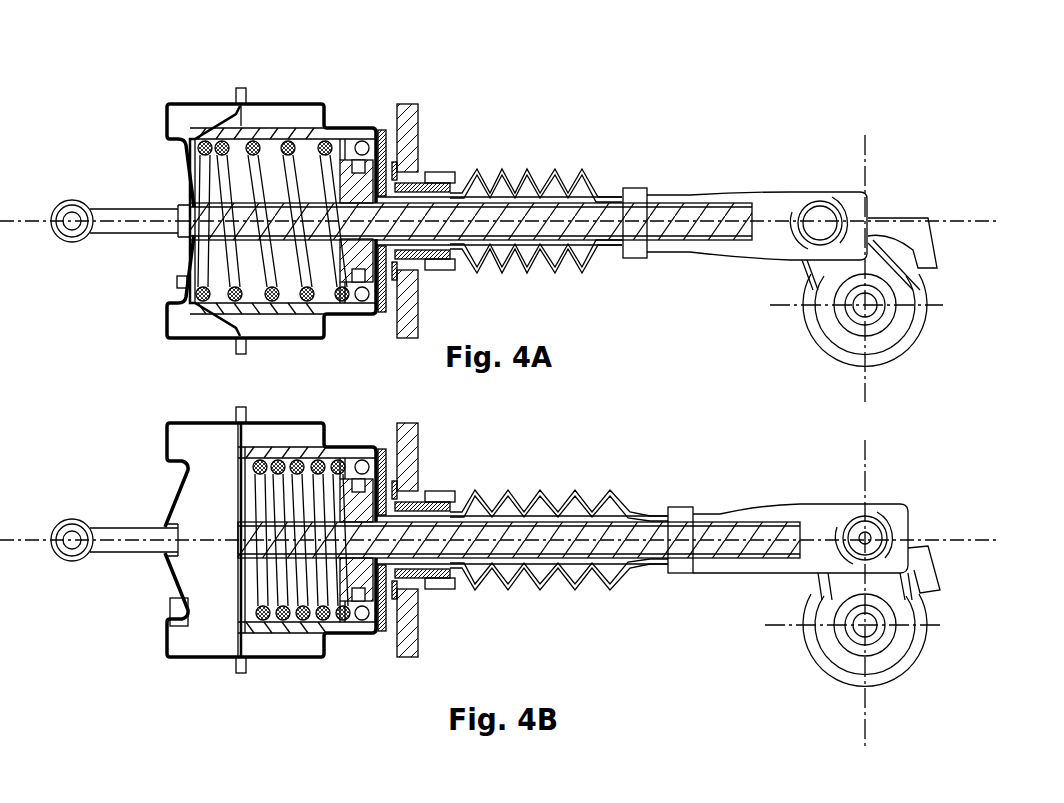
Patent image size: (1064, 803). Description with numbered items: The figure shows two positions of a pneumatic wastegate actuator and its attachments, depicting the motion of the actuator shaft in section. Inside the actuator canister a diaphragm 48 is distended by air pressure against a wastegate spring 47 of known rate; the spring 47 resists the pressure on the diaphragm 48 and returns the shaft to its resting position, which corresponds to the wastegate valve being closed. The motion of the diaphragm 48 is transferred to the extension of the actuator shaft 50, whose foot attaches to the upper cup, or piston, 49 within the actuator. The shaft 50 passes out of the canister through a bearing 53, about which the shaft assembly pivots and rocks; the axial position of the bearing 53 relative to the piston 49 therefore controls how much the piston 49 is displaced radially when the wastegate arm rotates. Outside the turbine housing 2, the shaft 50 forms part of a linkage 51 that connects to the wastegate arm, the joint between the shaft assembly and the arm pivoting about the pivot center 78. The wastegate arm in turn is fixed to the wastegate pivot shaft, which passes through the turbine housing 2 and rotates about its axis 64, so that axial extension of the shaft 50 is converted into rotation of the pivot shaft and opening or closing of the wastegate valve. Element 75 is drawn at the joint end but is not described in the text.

In FIG. 4A, the turbine housing 2 is at (807, 340).
In FIG. 4B, the turbine housing 2 is at (854, 593).
In FIG. 4A, the wastegate spring 47 is at (288, 143).
In FIG. 4B, the wastegate spring 47 is at (301, 540).
In FIG. 4A, the diaphragm 48 is at (248, 120).
In FIG. 4B, the diaphragm 48 is at (247, 447).
In FIG. 4A, the upper cup (actuator piston) 49 is at (262, 120).
In FIG. 4B, the upper cup (actuator piston) 49 is at (307, 447).
In FIG. 4A, the actuator shaft 50 is at (665, 213).
In FIG. 4B, the actuator shaft 50 is at (673, 537).
In FIG. 4A, the linkage 51 is at (780, 207).
In FIG. 4B, the linkage 51 is at (788, 530).
In FIG. 4A, the bearing 53 is at (355, 192).
In FIG. 4B, the bearing 53 is at (356, 540).
In FIG. 4A, the axis of the wastegate pivot shaft 64 is at (872, 312).
In FIG. 4B, the axis of the wastegate pivot shaft 64 is at (865, 625).
In FIG. 4A, the bracket 75 is at (882, 217).
In FIG. 4B, the bracket 75 is at (879, 573).
In FIG. 4B, the pivot center of the joint 78 is at (872, 535).